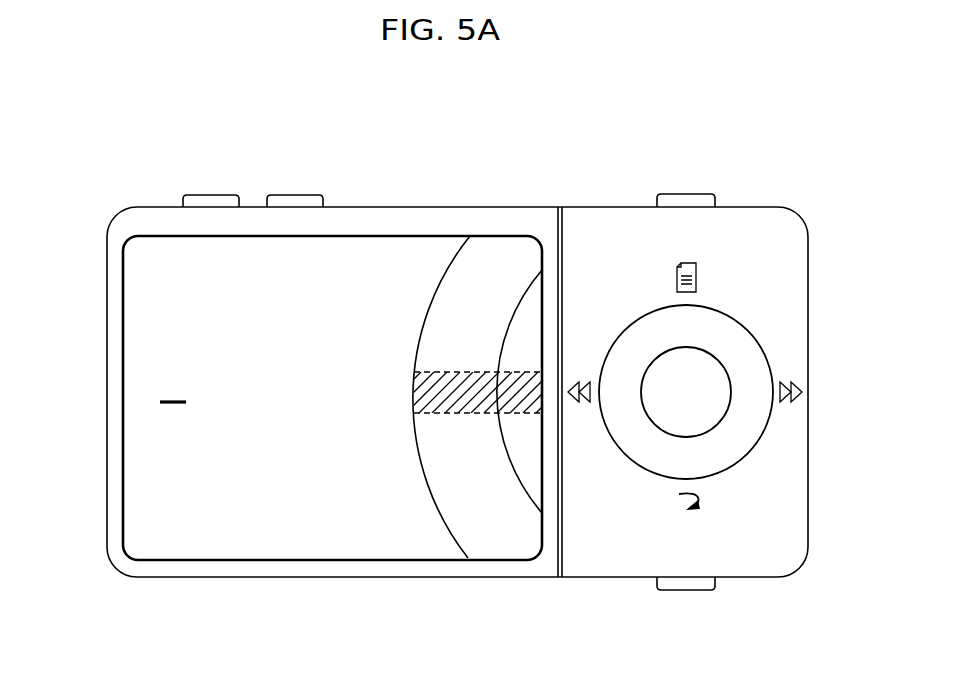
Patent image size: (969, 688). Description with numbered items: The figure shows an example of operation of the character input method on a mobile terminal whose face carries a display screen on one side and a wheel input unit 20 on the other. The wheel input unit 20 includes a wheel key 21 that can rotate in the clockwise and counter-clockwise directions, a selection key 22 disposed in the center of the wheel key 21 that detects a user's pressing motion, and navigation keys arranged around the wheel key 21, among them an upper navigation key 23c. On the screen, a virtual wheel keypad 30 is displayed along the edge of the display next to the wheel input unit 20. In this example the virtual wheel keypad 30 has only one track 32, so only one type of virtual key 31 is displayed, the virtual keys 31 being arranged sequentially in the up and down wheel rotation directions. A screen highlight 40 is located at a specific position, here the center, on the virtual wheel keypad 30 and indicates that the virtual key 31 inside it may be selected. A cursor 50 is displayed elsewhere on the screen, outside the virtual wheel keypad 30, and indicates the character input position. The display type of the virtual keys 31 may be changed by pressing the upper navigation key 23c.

The wheel input unit 20 is at (720, 386).
The wheel key 21 is at (758, 412).
The selection key 22 is at (719, 378).
The upper navigation key 23c is at (687, 262).
The virtual wheel keypad 30 is at (440, 522).
The virtual key 31 is at (447, 368).
The track 32 is at (470, 250).
The screen highlight 40 is at (437, 372).
The cursor 50 is at (162, 401).